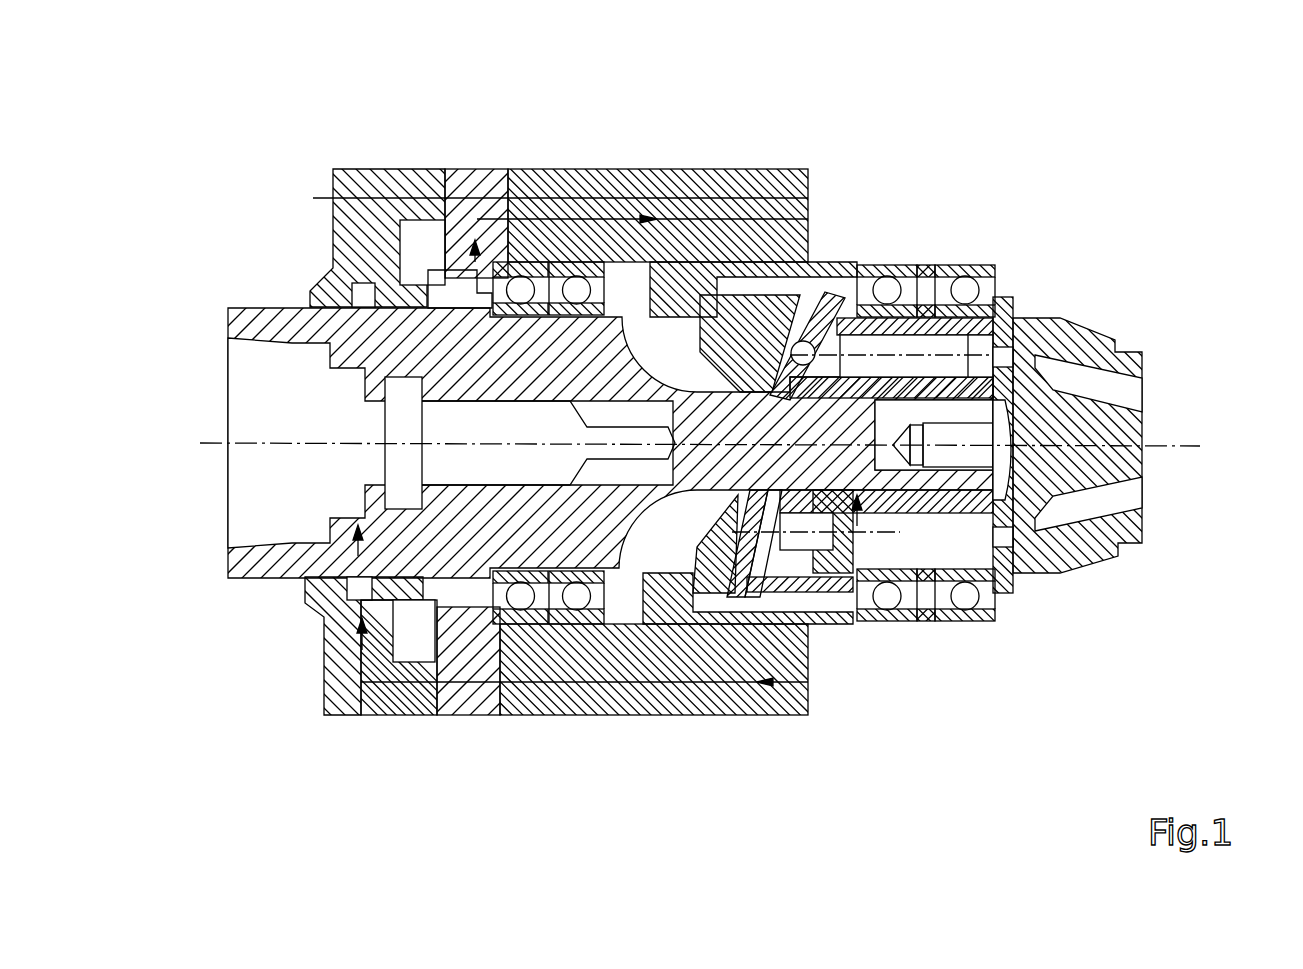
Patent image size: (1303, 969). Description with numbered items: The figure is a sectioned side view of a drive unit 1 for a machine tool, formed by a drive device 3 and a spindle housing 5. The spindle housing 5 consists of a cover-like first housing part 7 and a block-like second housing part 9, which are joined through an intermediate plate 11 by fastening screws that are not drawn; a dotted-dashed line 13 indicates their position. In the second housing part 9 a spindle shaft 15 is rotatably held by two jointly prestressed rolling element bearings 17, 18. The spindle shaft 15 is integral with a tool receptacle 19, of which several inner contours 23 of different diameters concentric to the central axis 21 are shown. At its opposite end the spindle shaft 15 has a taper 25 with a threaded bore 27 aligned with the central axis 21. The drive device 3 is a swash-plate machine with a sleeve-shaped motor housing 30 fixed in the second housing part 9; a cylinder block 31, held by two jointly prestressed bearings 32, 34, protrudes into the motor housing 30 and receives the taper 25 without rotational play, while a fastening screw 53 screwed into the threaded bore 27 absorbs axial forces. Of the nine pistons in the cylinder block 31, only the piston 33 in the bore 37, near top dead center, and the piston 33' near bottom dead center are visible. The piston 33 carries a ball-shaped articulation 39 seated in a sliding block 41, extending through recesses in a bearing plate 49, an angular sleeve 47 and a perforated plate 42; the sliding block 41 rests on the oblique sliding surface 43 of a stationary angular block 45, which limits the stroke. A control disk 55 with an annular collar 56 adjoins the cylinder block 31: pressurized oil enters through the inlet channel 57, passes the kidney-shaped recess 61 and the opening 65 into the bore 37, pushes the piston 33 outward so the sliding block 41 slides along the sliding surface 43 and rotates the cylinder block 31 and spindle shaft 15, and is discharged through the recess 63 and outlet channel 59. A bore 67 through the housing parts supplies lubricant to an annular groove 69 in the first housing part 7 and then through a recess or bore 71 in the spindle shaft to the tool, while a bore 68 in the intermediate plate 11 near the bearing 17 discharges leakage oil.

The drive unit 1 is at (514, 95).
The drive device 3 is at (870, 167).
The spindle housing 5 is at (575, 140).
The first housing part 7 is at (398, 185).
The second housing part 9 is at (623, 185).
The intermediate plate 11 is at (470, 190).
The dotted-dashed line 13 is at (322, 198).
The spindle shaft 15 is at (262, 570).
The bearing 17 is at (495, 625).
The bearing 18 is at (552, 623).
The tool receptacle 19 is at (202, 377).
The central axis 21 is at (213, 440).
The inner contours 23 is at (247, 365).
The taper 25 is at (868, 623).
The threaded bore 27 is at (938, 623).
The motor housing 30 is at (672, 250).
The cylinder block 31 is at (1003, 600).
The bearing 32 is at (902, 265).
The piston 33 is at (919, 272).
The piston 33' is at (819, 643).
The bearing 34 is at (947, 263).
The bore 37 is at (1045, 318).
The ball-shaped articulation 39 is at (805, 640).
The sliding block 41 is at (765, 300).
The perforated plate 42 is at (705, 600).
The sliding surface 43 is at (805, 292).
The angular block 45 is at (640, 630).
The angular sleeve 47 is at (835, 300).
The bearing plate 49 is at (735, 600).
The fastening screw 53 is at (980, 437).
The control disk 55 is at (1120, 333).
The annular collar 56 is at (1128, 553).
The inlet channel 57 is at (1122, 390).
The outlet channel 59 is at (1118, 502).
The recess 61 is at (1100, 343).
The recess 63 is at (1040, 540).
The opening 65 is at (1017, 313).
The bore 67 is at (367, 713).
The bore 68 is at (545, 185).
The annular groove 69 is at (325, 630).
The recess or bore 71 is at (305, 555).